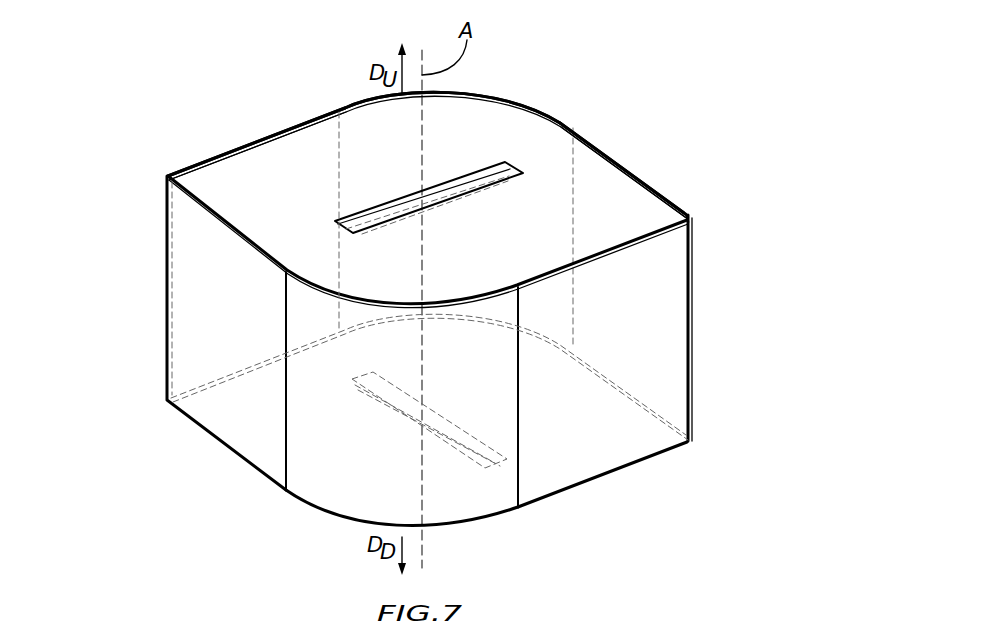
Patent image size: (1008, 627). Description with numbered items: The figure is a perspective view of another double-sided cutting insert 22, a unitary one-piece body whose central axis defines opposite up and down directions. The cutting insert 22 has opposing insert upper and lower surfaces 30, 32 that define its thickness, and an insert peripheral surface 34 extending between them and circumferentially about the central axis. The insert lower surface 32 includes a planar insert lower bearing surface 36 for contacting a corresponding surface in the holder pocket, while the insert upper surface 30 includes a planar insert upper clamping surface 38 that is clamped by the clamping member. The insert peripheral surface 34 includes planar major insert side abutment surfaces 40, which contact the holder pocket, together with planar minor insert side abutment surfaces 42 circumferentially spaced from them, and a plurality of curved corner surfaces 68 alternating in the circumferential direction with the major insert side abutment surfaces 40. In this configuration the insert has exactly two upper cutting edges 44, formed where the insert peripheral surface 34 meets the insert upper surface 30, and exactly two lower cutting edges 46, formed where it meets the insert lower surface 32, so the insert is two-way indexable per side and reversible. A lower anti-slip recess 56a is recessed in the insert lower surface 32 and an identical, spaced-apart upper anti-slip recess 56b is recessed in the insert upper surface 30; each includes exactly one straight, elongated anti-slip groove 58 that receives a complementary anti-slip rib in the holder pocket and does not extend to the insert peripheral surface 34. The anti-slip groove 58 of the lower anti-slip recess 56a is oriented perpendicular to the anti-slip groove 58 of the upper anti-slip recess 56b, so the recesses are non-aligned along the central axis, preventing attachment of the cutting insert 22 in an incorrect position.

The cutting insert 22 is at (647, 100).
The insert upper surface 30 is at (533, 143).
The insert lower surface 32 is at (208, 459).
The insert peripheral surface 34 is at (652, 287).
The insert lower bearing surface 36 is at (280, 512).
The insert upper clamping surface 38 is at (465, 145).
The major insert side abutment surface 40 is at (200, 323).
The minor insert side abutment surface 42 is at (212, 140).
The upper cutting edge 44 is at (222, 228).
The lower cutting edge 46 is at (207, 378).
The lower anti-slip recess 56a is at (365, 426).
The upper anti-slip recess 56b is at (372, 178).
The anti-slip groove 58 is at (498, 178).
The curved corner surface 68 is at (474, 74).